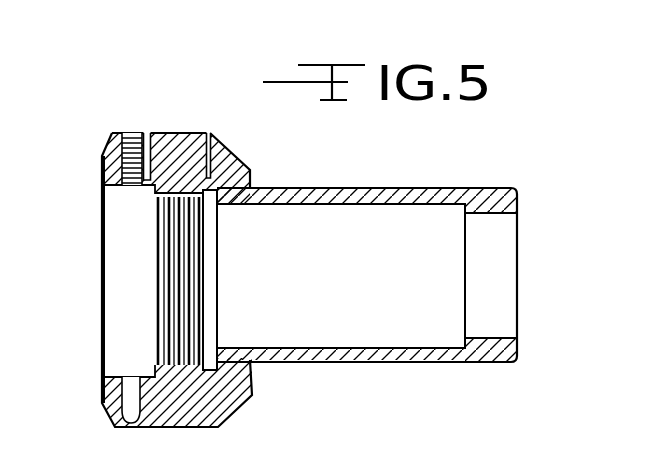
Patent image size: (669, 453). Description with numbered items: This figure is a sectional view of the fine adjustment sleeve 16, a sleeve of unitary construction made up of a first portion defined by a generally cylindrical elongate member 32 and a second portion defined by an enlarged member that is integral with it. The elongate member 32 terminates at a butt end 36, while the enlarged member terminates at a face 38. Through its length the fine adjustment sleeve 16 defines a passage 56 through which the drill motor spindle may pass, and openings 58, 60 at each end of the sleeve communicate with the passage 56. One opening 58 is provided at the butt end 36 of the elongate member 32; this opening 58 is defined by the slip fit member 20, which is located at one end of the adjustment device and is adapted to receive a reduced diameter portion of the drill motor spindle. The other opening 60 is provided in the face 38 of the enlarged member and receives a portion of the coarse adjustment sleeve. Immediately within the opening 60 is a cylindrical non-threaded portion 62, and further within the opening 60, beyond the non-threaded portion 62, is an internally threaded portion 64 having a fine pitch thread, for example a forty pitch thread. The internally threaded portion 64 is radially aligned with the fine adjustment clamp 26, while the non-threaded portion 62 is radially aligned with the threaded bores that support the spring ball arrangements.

The fine adjustment sleeve 16 is at (571, 102).
The slip fit member 20 is at (497, 245).
The fine adjustment clamp 26 is at (173, 133).
The elongate member 32 is at (481, 172).
The butt end 36 is at (517, 198).
The face 38 is at (103, 181).
The passage 56 is at (435, 275).
The opening 58 is at (500, 318).
The opening 60 is at (126, 338).
The cylindrical non-threaded portion 62 is at (112, 220).
The internally threaded portion 64 is at (160, 300).